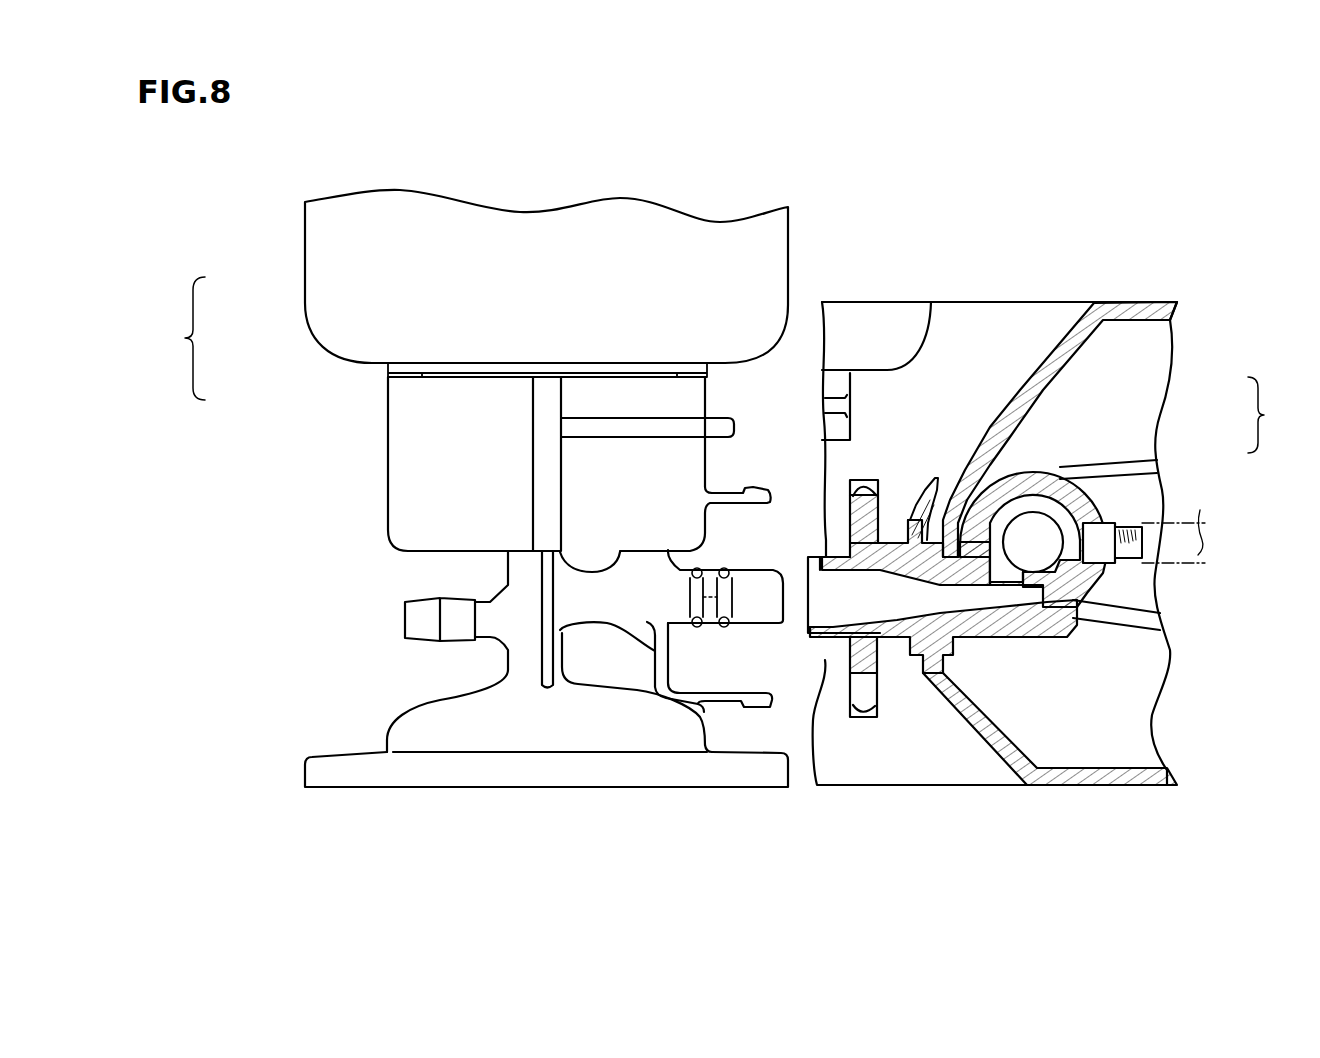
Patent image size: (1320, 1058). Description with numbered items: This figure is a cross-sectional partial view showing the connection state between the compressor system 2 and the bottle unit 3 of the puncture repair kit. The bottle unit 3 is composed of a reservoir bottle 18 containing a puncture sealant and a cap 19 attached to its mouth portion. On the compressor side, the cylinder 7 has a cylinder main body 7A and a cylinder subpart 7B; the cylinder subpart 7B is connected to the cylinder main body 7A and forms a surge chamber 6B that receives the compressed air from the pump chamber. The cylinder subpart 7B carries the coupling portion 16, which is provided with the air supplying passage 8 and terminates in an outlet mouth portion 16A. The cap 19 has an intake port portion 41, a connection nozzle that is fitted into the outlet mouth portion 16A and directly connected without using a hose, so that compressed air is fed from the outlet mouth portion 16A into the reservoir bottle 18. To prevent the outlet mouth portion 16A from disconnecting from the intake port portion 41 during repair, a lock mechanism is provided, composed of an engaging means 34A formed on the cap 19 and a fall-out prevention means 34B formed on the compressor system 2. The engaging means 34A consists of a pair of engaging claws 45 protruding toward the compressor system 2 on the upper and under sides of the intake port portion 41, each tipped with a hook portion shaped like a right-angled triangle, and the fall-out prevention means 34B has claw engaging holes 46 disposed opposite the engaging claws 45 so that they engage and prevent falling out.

The compressor system 2 is at (905, 508).
The bottle unit 3 is at (475, 439).
The reservoir bottle 18 is at (307, 290).
The cap 19 is at (387, 430).
The coupling portion 16 is at (993, 630).
The outlet mouth portion 16A is at (803, 580).
The engaging means 34A is at (763, 488).
The fall-out prevention means 34B is at (848, 479).
The engaging claws 45 is at (652, 661).
The claw engaging holes 46 is at (850, 485).
The intake port portion 41 is at (785, 594).
The cylinder 7 is at (1121, 503).
The cylinder main body 7A is at (988, 482).
The cylinder subpart 7B is at (1040, 488).
The surge chamber 6B is at (1027, 522).
The air supplying passage 8 is at (1075, 597).